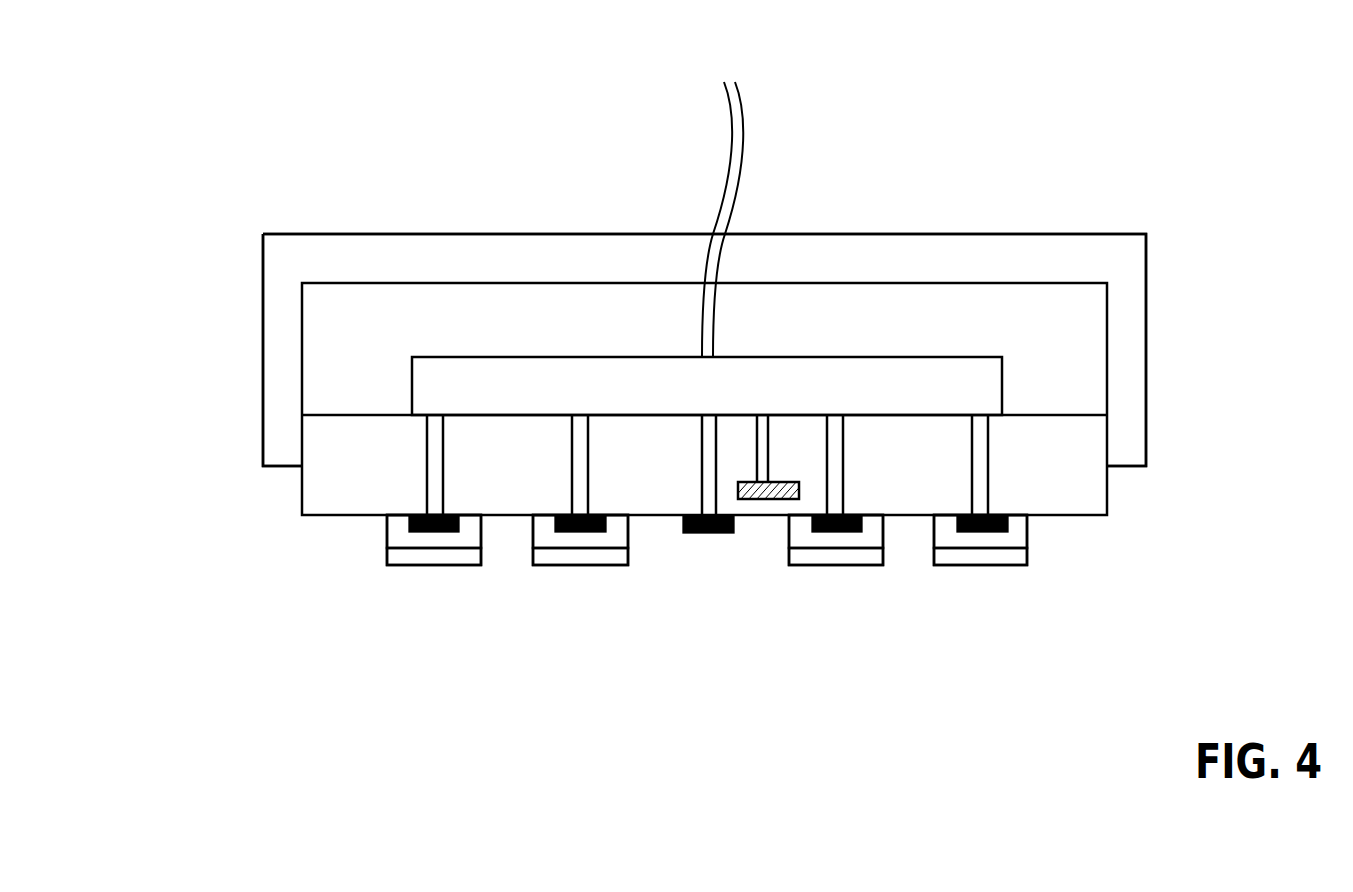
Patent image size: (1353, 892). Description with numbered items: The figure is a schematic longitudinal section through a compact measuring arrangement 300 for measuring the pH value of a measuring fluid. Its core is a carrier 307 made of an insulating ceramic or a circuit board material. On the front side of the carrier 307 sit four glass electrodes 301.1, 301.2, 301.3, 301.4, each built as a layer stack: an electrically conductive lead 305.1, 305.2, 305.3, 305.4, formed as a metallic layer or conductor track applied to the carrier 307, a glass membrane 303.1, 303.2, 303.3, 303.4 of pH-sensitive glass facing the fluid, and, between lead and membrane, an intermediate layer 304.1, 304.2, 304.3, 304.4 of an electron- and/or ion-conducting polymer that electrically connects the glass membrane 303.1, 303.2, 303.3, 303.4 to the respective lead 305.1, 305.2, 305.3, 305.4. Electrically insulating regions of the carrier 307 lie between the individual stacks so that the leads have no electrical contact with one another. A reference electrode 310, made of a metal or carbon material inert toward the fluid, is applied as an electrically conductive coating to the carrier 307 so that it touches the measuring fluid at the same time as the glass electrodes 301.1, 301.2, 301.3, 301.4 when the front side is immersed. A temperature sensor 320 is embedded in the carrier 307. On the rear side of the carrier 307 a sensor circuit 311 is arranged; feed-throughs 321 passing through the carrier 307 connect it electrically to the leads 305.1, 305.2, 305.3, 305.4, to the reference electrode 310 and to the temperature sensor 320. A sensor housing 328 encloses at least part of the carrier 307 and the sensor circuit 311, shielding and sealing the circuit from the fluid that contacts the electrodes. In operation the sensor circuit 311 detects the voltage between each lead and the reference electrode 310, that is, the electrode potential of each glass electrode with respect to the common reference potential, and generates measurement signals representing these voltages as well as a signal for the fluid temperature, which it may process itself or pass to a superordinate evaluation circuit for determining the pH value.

The measuring arrangement 300 is at (1078, 167).
The sensor housing 328 is at (1123, 310).
The carrier 307 is at (325, 463).
The sensor circuit 311 is at (425, 378).
The feed-throughs 321 is at (698, 437).
The temperature sensor 320 is at (757, 440).
The reference electrode 310 is at (718, 534).
The glass electrode 301.1 is at (378, 597).
The glass electrode 301.2 is at (547, 595).
The glass electrode 301.3 is at (817, 612).
The glass electrode 301.4 is at (1014, 596).
The glass membrane 303.1 is at (400, 556).
The glass membrane 303.2 is at (583, 557).
The glass membrane 303.3 is at (843, 557).
The glass membrane 303.4 is at (1027, 560).
The intermediate layer 304.1 is at (402, 528).
The intermediate layer 304.2 is at (543, 530).
The intermediate layer 304.3 is at (870, 532).
The intermediate layer 304.4 is at (1020, 533).
The electrically conductive lead 305.1 is at (442, 532).
The electrically conductive lead 305.2 is at (603, 532).
The electrically conductive lead 305.3 is at (812, 532).
The electrically conductive lead 305.4 is at (993, 533).